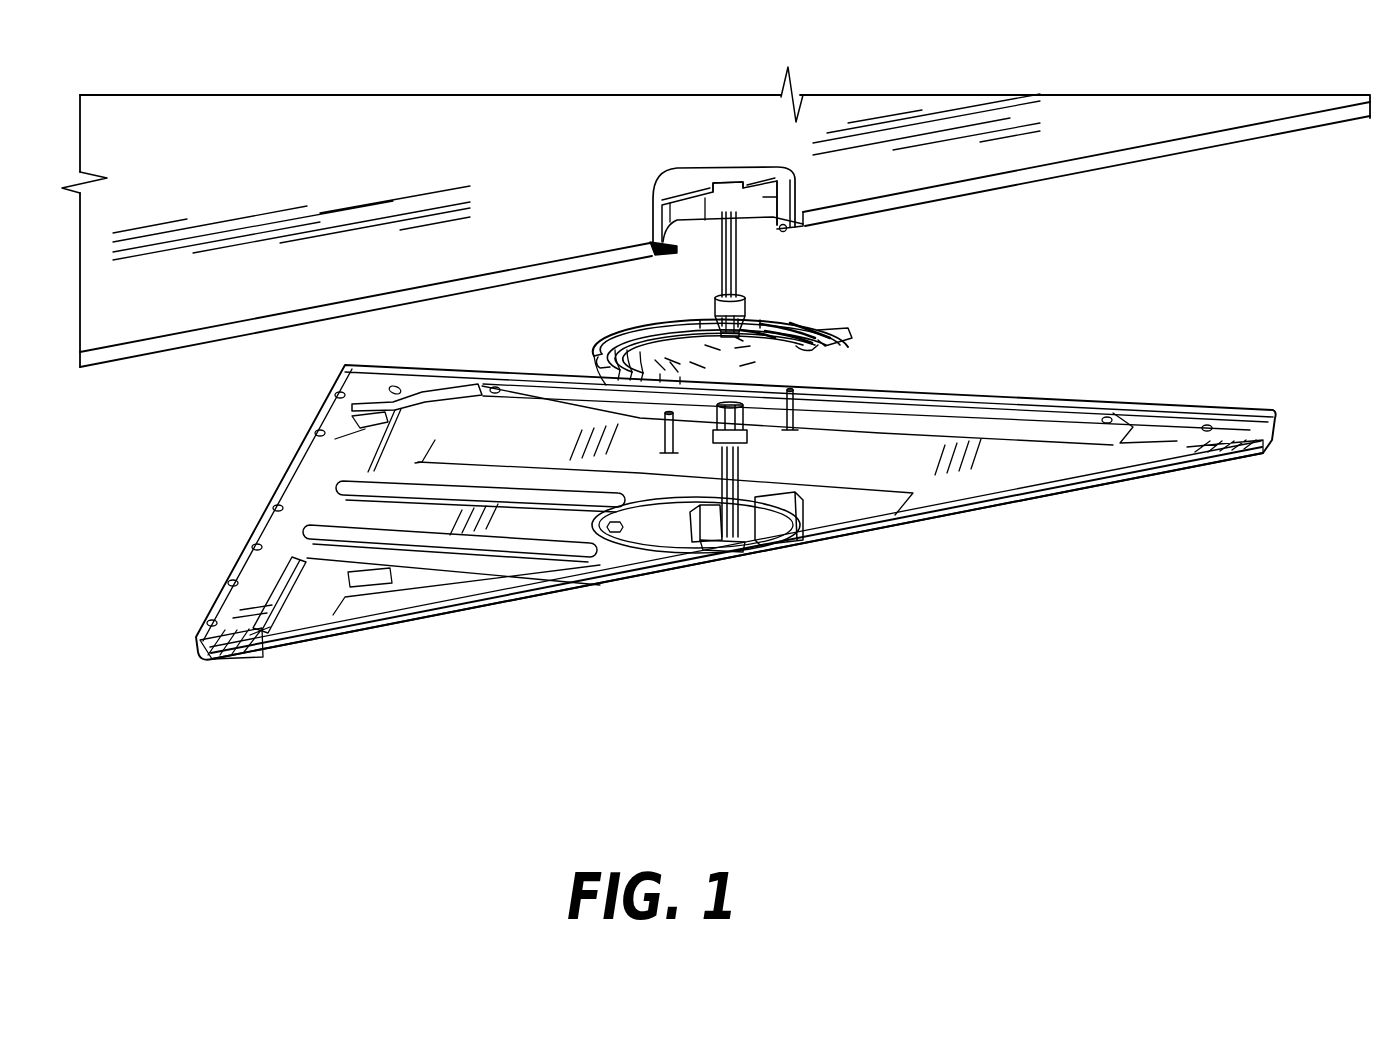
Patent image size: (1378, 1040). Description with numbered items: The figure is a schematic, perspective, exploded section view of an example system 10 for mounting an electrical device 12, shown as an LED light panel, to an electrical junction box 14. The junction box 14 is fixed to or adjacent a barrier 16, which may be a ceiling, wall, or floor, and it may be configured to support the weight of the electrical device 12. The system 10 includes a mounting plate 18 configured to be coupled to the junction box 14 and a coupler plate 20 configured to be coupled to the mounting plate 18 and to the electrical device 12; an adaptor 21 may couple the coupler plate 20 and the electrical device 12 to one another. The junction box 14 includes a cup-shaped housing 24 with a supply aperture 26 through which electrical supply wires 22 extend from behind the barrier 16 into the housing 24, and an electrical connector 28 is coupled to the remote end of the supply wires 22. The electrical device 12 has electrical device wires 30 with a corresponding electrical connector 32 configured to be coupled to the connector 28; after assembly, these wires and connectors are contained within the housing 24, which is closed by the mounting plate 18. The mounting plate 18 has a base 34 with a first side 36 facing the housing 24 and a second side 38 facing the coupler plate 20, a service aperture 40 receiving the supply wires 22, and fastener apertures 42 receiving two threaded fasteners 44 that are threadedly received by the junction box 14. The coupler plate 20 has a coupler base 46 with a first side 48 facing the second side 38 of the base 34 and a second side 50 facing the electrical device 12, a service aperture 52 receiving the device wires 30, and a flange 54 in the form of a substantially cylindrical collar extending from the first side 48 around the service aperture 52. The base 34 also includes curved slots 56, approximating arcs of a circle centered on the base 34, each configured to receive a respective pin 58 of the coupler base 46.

The system 10 is at (1072, 283).
The electrical device 12 is at (736, 512).
The electrical junction box 14 is at (680, 178).
The barrier 16 is at (524, 226).
The mounting plate 18 is at (716, 325).
The coupler plate 20 is at (893, 512).
The adaptor 21 is at (529, 531).
The electrical supply wires 22 is at (738, 238).
The cup-shaped housing 24 is at (800, 191).
The supply aperture 26 is at (717, 176).
The electrical connector 28 is at (715, 300).
The electrical device wires 30 is at (773, 514).
The electrical connector 32 is at (712, 437).
The base 34 is at (628, 333).
The first side 36 is at (753, 318).
The second side 38 is at (787, 349).
The service aperture 40 is at (725, 349).
The fastener apertures 42 is at (660, 348).
The fasteners 44 is at (660, 438).
The coupler base 46 is at (652, 550).
The first side 48 is at (793, 517).
The second side 50 is at (792, 562).
The service aperture 52 is at (723, 553).
The flange 54 is at (688, 517).
The curved slots 56 is at (598, 363).
The pins 58 is at (612, 530).